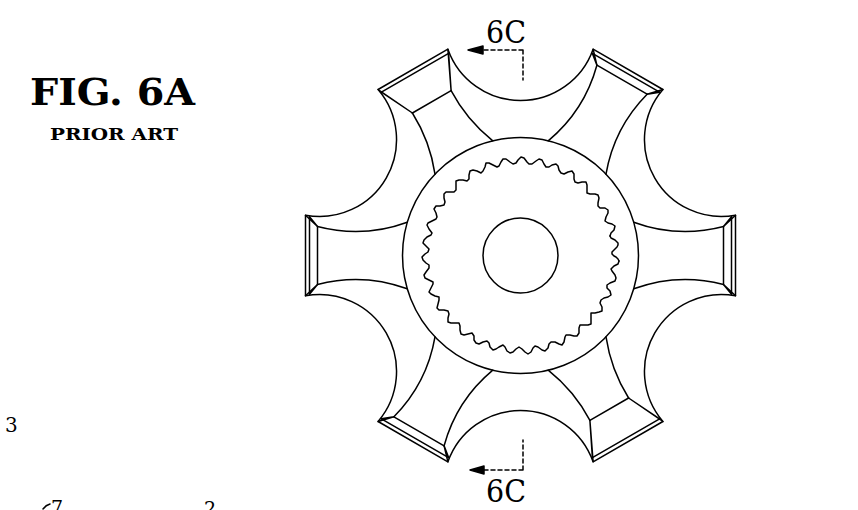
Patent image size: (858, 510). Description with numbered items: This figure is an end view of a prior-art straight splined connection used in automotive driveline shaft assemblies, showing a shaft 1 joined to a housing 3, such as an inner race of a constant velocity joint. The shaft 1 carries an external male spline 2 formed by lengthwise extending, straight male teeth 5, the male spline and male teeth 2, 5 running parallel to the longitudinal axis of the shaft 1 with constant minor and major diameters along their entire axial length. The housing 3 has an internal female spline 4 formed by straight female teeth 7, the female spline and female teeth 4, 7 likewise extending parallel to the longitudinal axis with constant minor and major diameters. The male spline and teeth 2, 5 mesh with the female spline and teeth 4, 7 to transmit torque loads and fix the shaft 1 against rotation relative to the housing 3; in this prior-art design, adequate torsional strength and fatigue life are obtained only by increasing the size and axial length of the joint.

The shaft 1 is at (583, 210).
The gear teeth 2, 5 is at (592, 263).
The male spline 2 is at (592, 263).
The male teeth 5 is at (610, 298).
The housing 3 is at (645, 81).
The gear tooth 4, 7 is at (722, 254).
The female spline 4 is at (722, 254).
The female teeth 7 is at (614, 247).